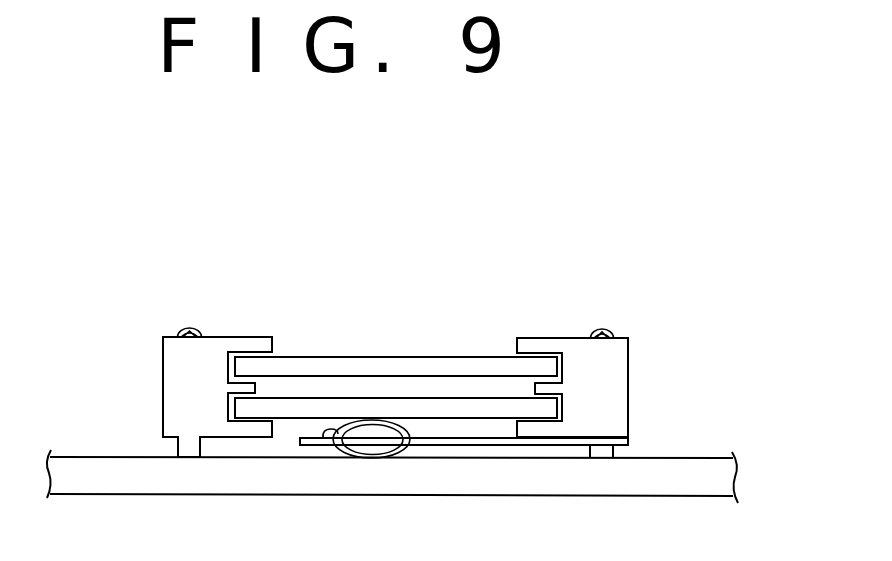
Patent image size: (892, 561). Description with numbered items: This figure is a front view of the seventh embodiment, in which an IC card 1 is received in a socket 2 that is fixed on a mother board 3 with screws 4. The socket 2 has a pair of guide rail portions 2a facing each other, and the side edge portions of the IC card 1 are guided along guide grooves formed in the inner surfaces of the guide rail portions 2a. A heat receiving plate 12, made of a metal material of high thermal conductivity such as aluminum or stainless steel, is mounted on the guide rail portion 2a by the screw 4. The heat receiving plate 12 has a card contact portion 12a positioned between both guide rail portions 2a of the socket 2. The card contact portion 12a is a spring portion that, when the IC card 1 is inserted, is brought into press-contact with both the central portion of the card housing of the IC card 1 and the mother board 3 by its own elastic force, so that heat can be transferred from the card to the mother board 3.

The IC card 1 is at (317, 360).
The socket 2 is at (393, 361).
The guide rail portion 2a is at (163, 372).
The mother board 3 is at (642, 494).
The screw 4 is at (187, 328).
The heat receiving plate 12 is at (498, 440).
The card contact portion 12a is at (323, 440).